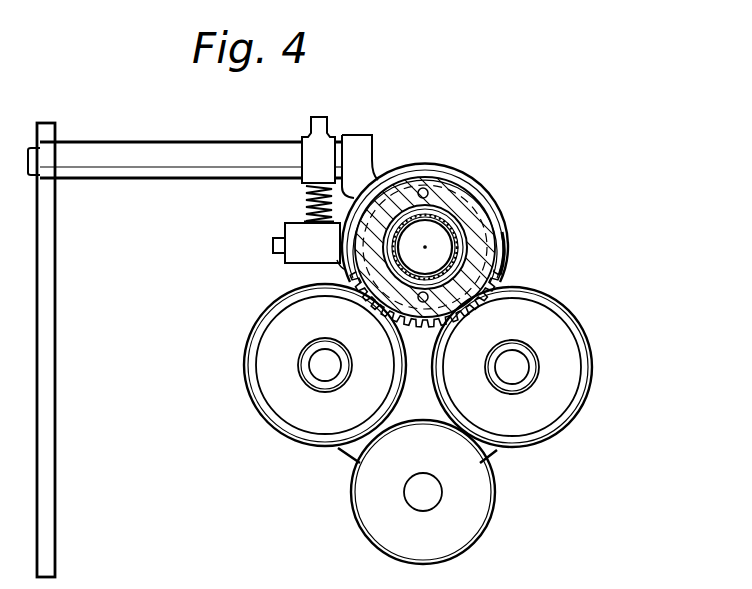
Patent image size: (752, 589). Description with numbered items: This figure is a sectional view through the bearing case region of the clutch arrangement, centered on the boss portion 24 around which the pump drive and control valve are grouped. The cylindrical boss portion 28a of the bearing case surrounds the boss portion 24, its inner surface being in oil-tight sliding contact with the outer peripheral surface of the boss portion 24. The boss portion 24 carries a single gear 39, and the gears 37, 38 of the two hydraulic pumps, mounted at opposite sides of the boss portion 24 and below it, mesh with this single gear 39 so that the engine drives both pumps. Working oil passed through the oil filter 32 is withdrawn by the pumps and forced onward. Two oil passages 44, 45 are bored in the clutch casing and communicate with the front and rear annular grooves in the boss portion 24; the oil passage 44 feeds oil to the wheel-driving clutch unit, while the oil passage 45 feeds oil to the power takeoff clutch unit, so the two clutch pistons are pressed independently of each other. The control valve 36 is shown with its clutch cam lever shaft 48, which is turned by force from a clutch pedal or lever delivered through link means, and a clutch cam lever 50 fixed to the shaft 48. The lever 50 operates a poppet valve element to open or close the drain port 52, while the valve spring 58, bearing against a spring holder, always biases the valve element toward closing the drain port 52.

The boss portion 24 is at (465, 210).
The cylindrical boss portion 28a is at (508, 268).
The oil filter 32 is at (496, 498).
The control valve 36 is at (296, 191).
The gear 37 is at (580, 341).
The gear 38 is at (256, 408).
The single gear 39 is at (507, 238).
The oil passage 44 is at (430, 189).
The oil passage 45 is at (393, 303).
The clutch cam lever shaft 48 is at (238, 148).
The clutch cam lever 50 is at (310, 124).
The drain port 52 is at (300, 264).
The valve spring 58 is at (300, 215).